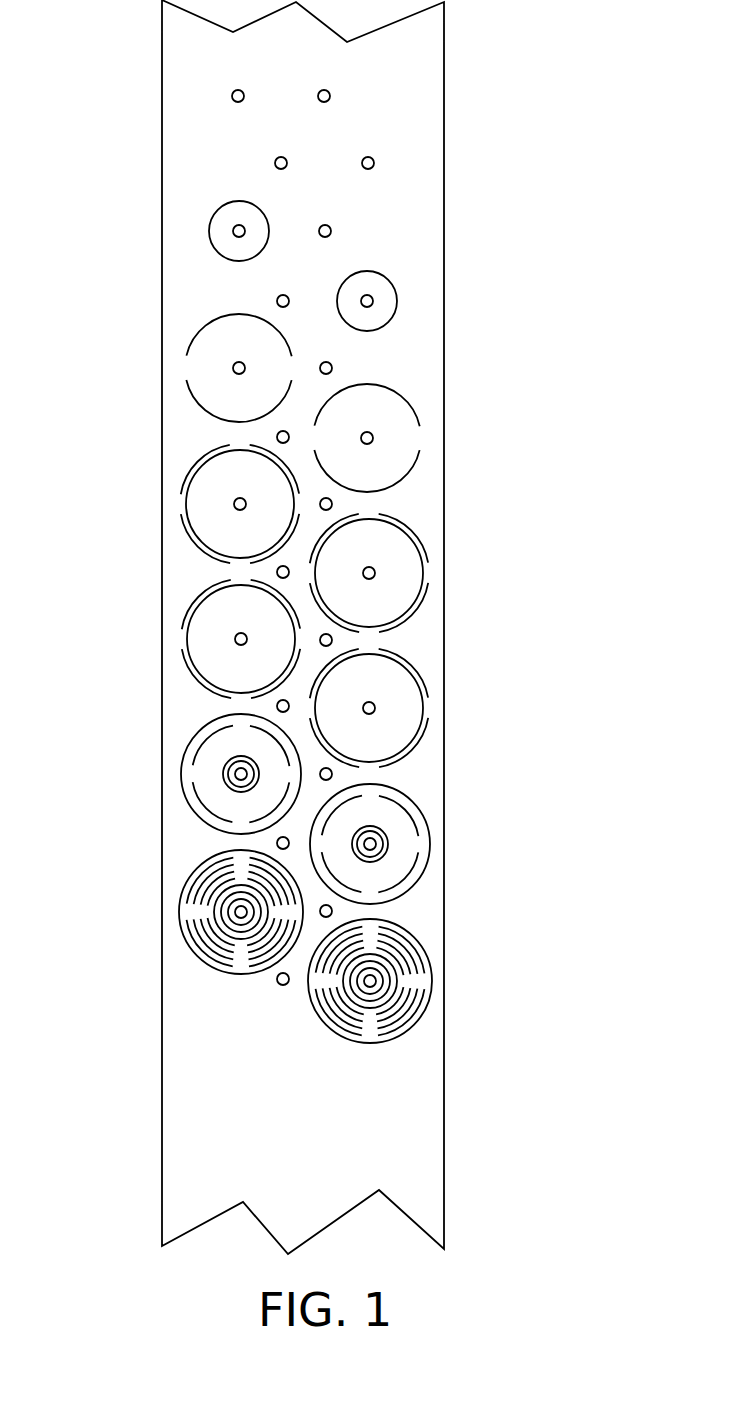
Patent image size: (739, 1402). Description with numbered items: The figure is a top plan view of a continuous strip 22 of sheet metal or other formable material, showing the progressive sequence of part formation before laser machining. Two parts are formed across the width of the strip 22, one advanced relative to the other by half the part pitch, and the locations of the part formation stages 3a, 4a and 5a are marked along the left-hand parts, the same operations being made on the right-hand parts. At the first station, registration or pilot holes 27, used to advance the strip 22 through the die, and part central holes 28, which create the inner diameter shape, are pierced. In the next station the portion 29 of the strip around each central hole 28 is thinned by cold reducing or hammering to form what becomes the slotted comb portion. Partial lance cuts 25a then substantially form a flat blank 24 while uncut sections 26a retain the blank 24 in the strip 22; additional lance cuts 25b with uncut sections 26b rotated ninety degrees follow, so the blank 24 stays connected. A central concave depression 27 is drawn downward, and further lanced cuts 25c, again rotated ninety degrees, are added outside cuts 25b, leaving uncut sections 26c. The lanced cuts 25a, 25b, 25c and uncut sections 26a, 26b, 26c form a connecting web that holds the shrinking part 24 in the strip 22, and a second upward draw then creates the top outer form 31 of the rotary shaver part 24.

The strip 22 is at (432, 204).
The flat blank 24 is at (400, 415).
The partial lance cuts 25a is at (392, 392).
The additional lance cuts 25b is at (427, 570).
The additional lanced cuts 25c is at (417, 888).
The uncut sections 26a is at (422, 438).
The uncut sections 26b is at (390, 503).
The uncut sections 26c is at (430, 845).
The pilot holes 27 is at (331, 92).
The part central holes 28 is at (284, 70).
The thinned portion 29 is at (245, 260).
The top outer form 31 is at (430, 987).
The part formation view location 3a is at (147, 361).
The part formation view location 4a is at (148, 767).
The part formation view location 5a is at (148, 905).